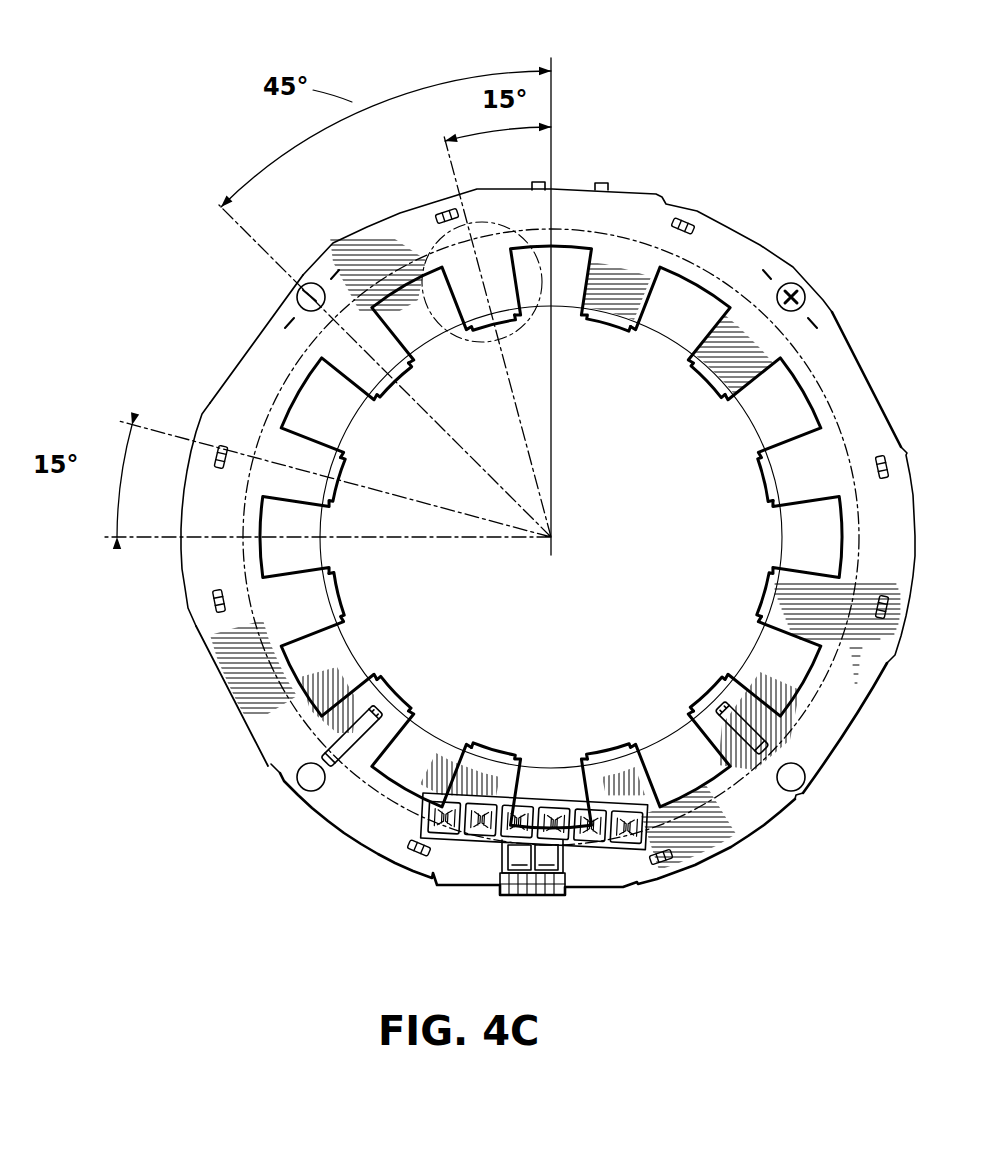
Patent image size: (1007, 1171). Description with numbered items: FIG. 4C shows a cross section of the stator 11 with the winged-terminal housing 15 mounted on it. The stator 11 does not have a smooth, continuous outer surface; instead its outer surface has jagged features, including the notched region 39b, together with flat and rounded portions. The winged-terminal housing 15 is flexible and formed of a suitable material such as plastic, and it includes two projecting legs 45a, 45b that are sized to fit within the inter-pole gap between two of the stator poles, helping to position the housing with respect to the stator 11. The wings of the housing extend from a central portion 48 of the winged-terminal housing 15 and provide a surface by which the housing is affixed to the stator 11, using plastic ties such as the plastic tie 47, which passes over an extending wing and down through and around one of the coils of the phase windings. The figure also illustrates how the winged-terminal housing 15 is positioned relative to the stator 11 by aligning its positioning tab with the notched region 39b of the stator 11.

The stator 11 is at (797, 246).
The winged-terminal housing 15 is at (412, 849).
The plastic tie 47 is at (345, 705).
The central portion 48 is at (506, 795).
The projecting leg 45a is at (322, 727).
The projecting leg 45b is at (697, 770).
The notched region 39b is at (604, 908).